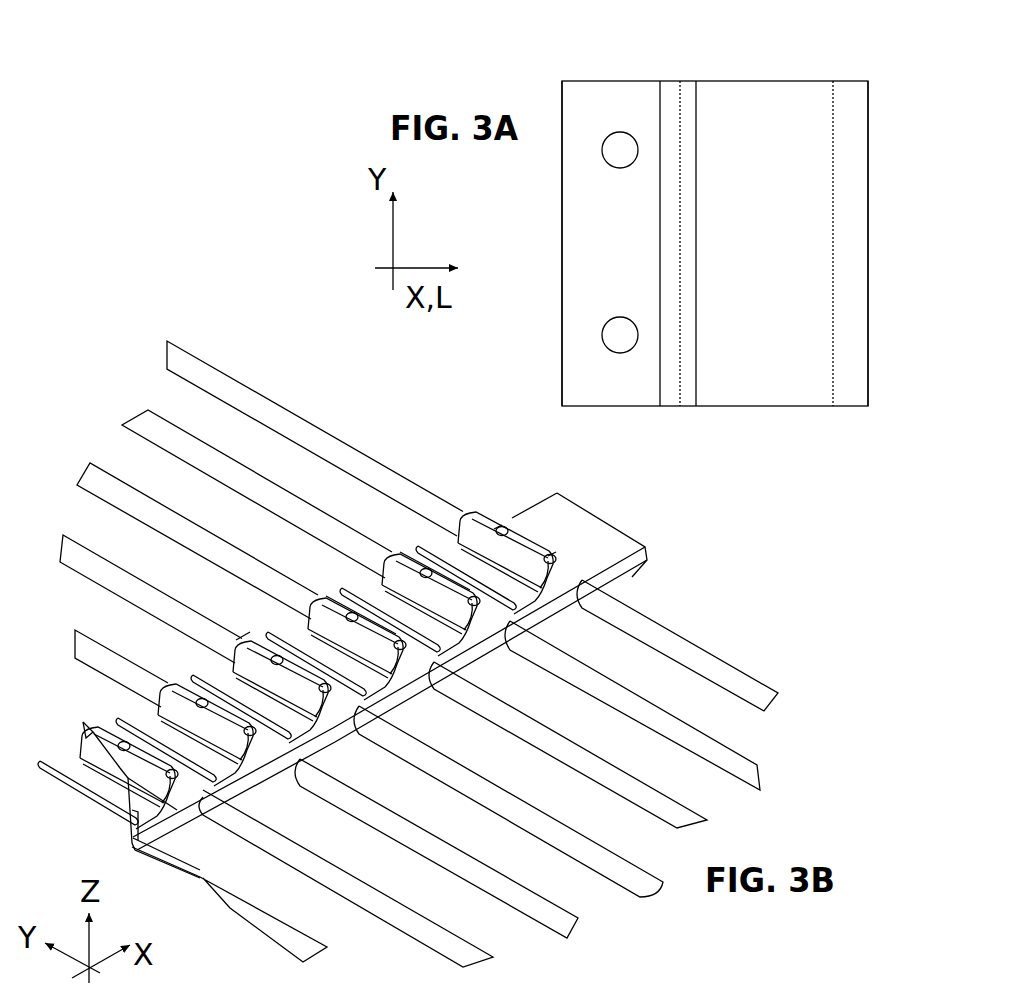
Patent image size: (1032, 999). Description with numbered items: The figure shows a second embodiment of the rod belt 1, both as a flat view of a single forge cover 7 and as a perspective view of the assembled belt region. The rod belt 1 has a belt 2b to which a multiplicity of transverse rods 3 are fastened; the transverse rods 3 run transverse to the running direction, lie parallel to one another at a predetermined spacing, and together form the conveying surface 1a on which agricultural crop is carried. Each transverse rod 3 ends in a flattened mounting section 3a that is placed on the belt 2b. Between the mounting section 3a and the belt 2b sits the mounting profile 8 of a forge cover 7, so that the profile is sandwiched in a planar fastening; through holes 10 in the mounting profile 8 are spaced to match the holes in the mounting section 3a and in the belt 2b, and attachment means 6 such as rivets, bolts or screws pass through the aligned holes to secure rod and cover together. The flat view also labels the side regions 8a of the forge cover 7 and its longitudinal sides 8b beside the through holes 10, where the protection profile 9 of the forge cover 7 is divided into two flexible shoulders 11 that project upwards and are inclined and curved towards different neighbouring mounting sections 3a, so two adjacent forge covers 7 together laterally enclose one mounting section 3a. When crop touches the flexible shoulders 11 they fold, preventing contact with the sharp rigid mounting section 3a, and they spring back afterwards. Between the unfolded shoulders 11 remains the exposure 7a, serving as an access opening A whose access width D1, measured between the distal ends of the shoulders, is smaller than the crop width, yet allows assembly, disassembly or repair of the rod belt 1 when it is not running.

In FIG. 3B, the rod belt 1 is at (130, 377).
In FIG. 3B, the conveying surface 1a is at (150, 465).
In FIG. 3B, the belt 2b is at (633, 562).
In FIG. 3B, the transverse rod 3 is at (367, 470).
In FIG. 3B, the mounting section 3a is at (492, 523).
In FIG. 3B, the attachment means 6 is at (550, 552).
In FIG. 3A, the forge cover 7 is at (560, 233).
In FIG. 3B, the forge cover 7 is at (522, 597).
In FIG. 3B, the exposure 7a is at (256, 630).
In FIG. 3B, the access opening A is at (203, 602).
In FIG. 3A, the mounting profile 8 is at (588, 368).
In FIG. 3A, the side flange 8a is at (560, 317).
In FIG. 3A, the longitudinal side 8b is at (748, 76).
In FIG. 3A, the protection profile 9 is at (747, 277).
In FIG. 3A, the through hole 10 is at (619, 326).
In FIG. 3A, the flexible shoulder 11 is at (662, 383).
In FIG. 3B, the flexible shoulder 11 is at (343, 562).
In FIG. 3B, the access width D1 is at (375, 705).